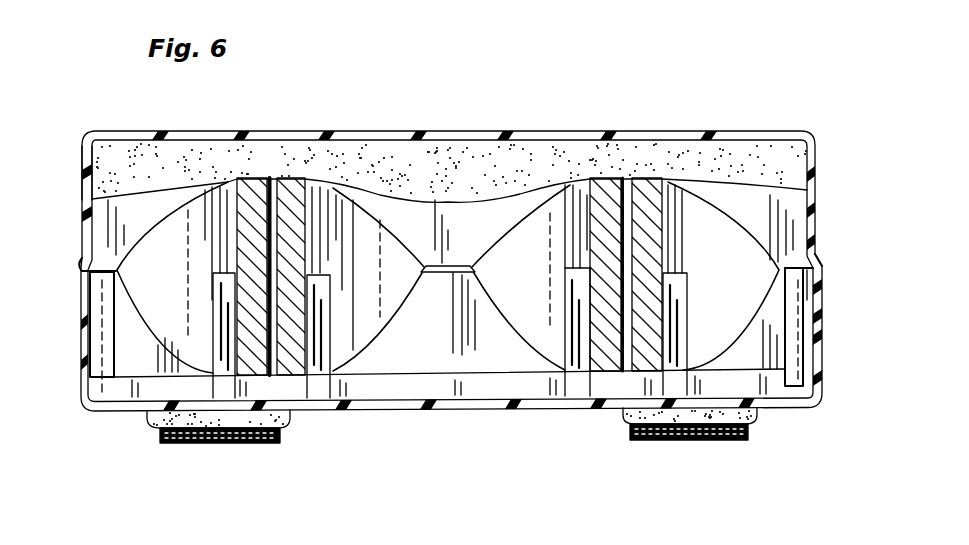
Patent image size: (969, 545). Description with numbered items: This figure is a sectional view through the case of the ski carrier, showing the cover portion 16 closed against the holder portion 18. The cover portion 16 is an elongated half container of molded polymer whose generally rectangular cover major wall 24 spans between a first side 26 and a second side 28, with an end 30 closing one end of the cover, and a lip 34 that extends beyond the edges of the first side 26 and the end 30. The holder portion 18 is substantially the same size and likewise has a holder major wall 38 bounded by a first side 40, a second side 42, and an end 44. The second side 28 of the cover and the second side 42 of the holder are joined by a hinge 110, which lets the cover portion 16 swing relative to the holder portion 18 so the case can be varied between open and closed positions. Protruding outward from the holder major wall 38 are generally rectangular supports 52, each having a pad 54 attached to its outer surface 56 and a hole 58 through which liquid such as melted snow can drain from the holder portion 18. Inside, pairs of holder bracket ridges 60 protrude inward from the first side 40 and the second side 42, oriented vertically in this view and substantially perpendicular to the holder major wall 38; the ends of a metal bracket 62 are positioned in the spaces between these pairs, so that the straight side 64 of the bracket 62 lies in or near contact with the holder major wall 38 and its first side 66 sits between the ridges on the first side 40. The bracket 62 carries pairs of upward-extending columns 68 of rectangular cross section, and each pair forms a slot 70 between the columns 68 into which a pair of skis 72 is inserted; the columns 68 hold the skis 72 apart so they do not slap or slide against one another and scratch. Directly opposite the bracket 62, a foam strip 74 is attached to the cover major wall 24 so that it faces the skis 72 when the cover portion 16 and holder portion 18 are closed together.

The cover portion 16 is at (812, 128).
The holder portion 18 is at (780, 418).
The cover major wall 24 is at (457, 134).
The first side 26 is at (85, 180).
The second side 28 is at (818, 150).
The end 30 is at (390, 203).
The lip 34 is at (78, 270).
The holder major wall 38 is at (400, 402).
The first side 40 is at (88, 322).
The second side 42 is at (814, 318).
The end 44 is at (523, 360).
The support 52 is at (227, 420).
The pad 54 is at (193, 445).
The outer surface 56 is at (180, 444).
The hole 58 is at (153, 420).
The holder bracket ridge 60 is at (84, 365).
The bracket 62 is at (373, 392).
The straight side 64 is at (365, 408).
The first side 66 is at (816, 290).
The column 68 is at (578, 296).
The slot 70 is at (282, 368).
The ski 72 is at (242, 295).
The foam strip 74 is at (727, 147).
The hinge 110 is at (824, 262).